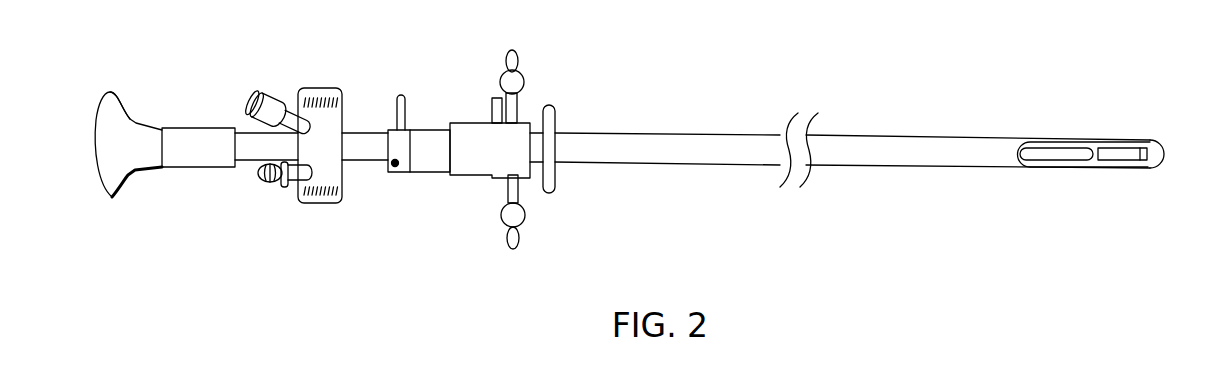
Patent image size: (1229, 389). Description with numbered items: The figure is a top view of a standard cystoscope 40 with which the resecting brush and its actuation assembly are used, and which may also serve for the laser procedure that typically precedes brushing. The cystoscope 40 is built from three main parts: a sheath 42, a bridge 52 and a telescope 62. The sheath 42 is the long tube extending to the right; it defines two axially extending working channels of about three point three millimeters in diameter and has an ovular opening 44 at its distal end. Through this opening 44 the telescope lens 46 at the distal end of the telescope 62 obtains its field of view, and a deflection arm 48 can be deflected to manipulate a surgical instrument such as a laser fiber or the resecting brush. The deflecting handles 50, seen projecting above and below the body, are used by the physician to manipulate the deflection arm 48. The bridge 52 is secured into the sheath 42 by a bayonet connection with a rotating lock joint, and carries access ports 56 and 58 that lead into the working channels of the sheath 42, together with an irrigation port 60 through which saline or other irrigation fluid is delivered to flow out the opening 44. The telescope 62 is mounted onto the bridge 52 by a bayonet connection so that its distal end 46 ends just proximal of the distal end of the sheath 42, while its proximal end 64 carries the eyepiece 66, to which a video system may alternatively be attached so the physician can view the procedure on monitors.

The cystoscope 40 is at (573, 246).
The sheath 42 is at (885, 133).
The ovular opening 44 is at (1127, 170).
The telescope lens 46 is at (1150, 140).
The deflection arm 48 is at (1085, 147).
The deflecting handles 50 is at (524, 80).
The bridge 52 is at (417, 173).
The access port 56 is at (297, 173).
The access port 58 is at (280, 98).
The irrigation port 60 is at (497, 98).
The telescope 62 is at (190, 127).
The proximal end 64 is at (95, 166).
The eyepiece 66 is at (125, 109).